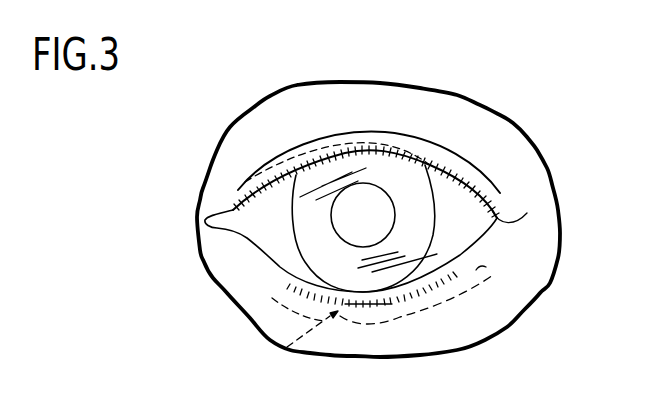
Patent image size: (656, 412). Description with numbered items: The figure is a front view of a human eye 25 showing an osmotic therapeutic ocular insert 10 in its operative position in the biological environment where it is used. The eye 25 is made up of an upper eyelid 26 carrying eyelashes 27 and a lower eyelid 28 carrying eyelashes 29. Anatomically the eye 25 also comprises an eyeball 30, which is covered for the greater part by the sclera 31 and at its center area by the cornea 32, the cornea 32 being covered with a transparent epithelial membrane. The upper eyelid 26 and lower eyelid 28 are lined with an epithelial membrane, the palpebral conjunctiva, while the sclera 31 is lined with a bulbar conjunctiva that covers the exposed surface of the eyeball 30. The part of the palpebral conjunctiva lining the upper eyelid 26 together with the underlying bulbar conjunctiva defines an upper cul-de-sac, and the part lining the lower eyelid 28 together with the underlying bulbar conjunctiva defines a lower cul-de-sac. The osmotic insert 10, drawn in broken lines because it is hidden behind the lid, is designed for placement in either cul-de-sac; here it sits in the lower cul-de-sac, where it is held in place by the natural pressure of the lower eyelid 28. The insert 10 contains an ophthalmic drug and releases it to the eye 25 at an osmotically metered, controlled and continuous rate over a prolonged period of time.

The ocular therapeutic insert 10 is at (280, 348).
The eye 25 is at (483, 100).
The upper eyelid 26 is at (297, 163).
The eyelashes 27 is at (352, 143).
The lower eyelid 28 is at (455, 272).
The eyelashes 29 is at (483, 267).
The eyeball 30 is at (288, 258).
The sclera 31 is at (470, 230).
The cornea 32 is at (397, 187).